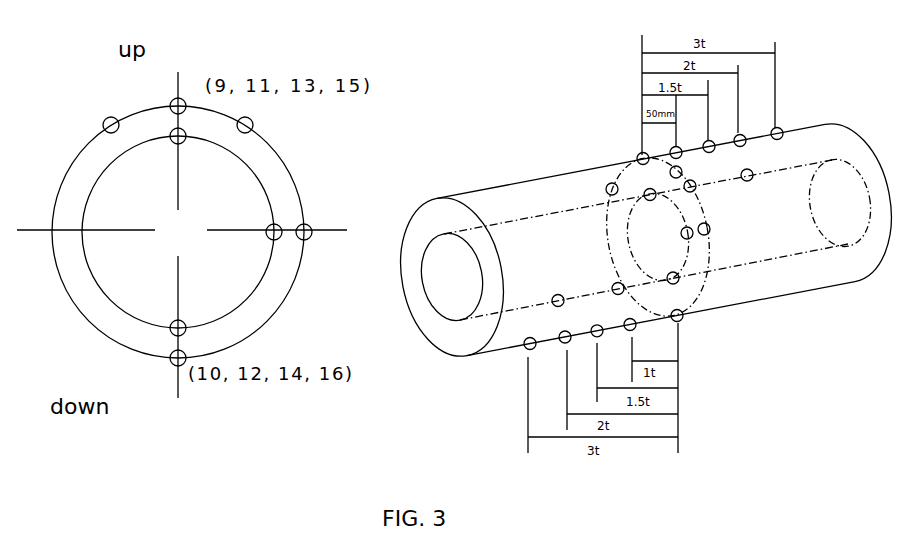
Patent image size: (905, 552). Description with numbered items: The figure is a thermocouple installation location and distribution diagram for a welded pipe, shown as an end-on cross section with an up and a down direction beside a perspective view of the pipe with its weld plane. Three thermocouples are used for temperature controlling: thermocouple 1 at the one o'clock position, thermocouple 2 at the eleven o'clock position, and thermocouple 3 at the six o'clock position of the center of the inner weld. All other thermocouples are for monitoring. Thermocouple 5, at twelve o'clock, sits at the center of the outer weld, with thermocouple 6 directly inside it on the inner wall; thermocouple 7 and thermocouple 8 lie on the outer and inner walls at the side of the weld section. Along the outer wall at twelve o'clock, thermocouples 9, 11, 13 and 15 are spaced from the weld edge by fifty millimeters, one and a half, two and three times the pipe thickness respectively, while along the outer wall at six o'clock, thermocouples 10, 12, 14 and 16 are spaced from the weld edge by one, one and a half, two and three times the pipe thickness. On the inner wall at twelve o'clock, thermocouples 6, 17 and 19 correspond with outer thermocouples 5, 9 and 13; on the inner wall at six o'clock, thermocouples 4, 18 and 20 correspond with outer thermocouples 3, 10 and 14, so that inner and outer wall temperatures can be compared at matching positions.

The thermocouple for temperature controlling 1 is at (469, 144).
The thermocouple for temperature controlling 2 is at (355, 149).
The thermocouple for temperature controlling 3 is at (434, 347).
The monitoring thermocouple 4 is at (424, 295).
The monitoring thermocouple 5 is at (409, 120).
The monitoring thermocouple 6 is at (417, 174).
The monitoring thermocouple 7 is at (514, 222).
The monitoring thermocouple 8 is at (470, 224).
The monitoring thermocouple 9 is at (667, 145).
The monitoring thermocouple 10 is at (644, 330).
The monitoring thermocouple 11 is at (701, 139).
The monitoring thermocouple 12 is at (608, 340).
The monitoring thermocouple 13 is at (739, 134).
The monitoring thermocouple 14 is at (576, 346).
The monitoring thermocouple 15 is at (779, 125).
The monitoring thermocouple 16 is at (543, 355).
The monitoring thermocouple 17 is at (703, 191).
The monitoring thermocouple 18 is at (607, 282).
The monitoring thermocouple 19 is at (758, 183).
The monitoring thermocouple 20 is at (555, 293).